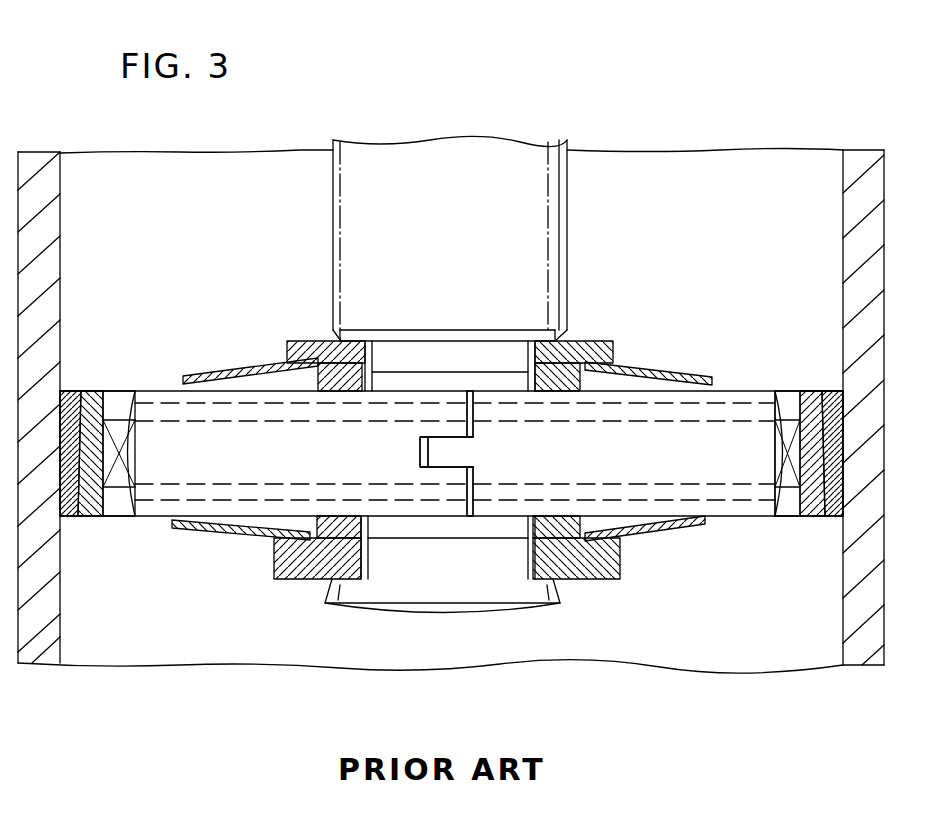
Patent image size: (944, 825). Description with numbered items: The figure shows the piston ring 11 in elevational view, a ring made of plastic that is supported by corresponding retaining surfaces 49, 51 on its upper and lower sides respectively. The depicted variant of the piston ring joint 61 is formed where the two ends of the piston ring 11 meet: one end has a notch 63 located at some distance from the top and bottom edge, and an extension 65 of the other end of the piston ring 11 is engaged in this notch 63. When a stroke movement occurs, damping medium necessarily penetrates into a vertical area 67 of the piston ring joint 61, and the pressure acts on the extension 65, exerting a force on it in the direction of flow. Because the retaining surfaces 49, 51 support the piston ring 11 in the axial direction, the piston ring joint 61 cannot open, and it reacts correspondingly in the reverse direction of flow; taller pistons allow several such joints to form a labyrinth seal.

The piston ring 11 is at (96, 534).
The retaining surface 49 is at (800, 420).
The retaining surface 51 is at (812, 480).
The piston ring joint 61 is at (395, 457).
The notch 63 is at (422, 446).
The extension 65 is at (430, 455).
The vertical area 67 is at (480, 407).